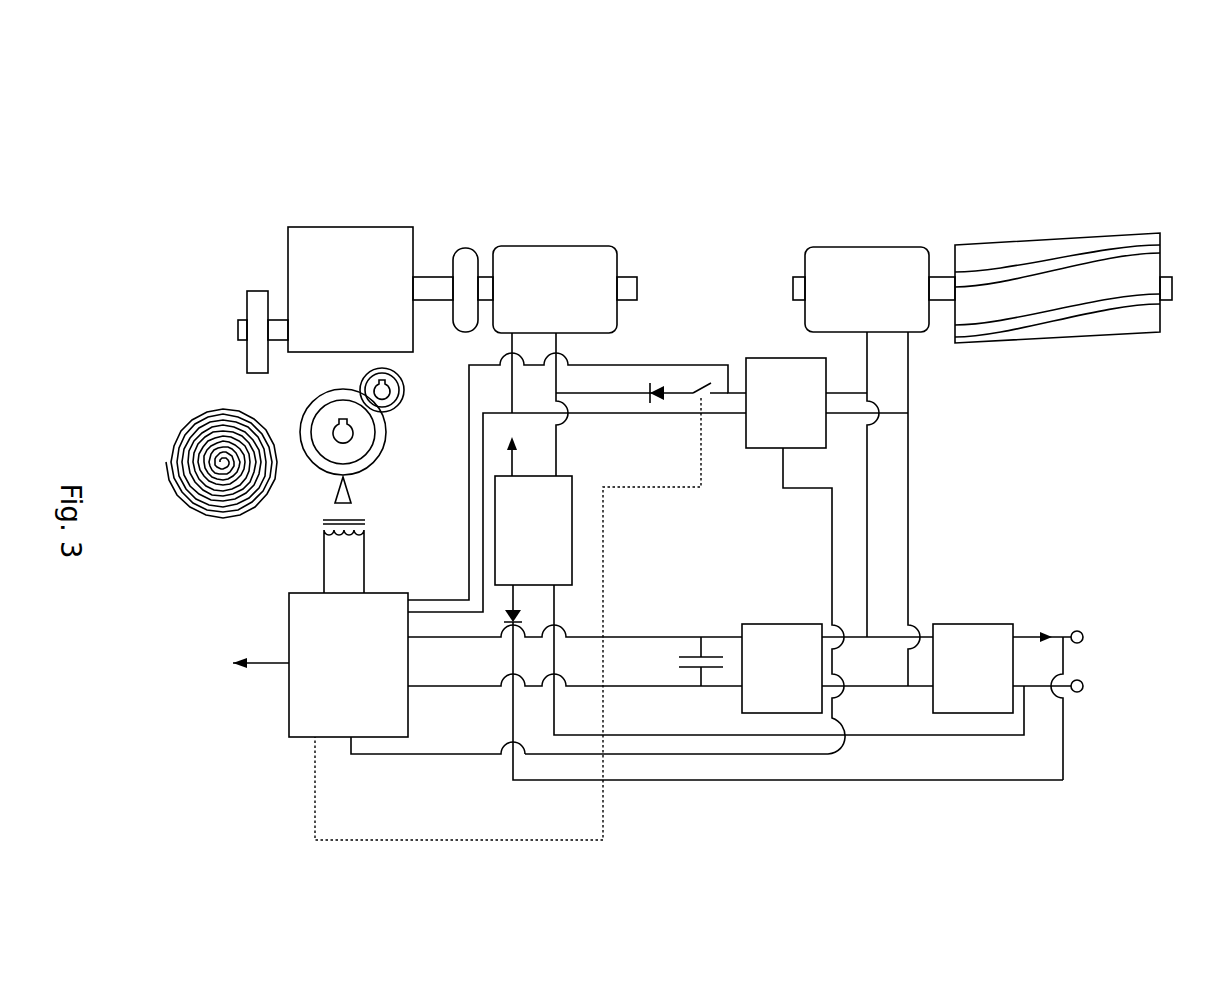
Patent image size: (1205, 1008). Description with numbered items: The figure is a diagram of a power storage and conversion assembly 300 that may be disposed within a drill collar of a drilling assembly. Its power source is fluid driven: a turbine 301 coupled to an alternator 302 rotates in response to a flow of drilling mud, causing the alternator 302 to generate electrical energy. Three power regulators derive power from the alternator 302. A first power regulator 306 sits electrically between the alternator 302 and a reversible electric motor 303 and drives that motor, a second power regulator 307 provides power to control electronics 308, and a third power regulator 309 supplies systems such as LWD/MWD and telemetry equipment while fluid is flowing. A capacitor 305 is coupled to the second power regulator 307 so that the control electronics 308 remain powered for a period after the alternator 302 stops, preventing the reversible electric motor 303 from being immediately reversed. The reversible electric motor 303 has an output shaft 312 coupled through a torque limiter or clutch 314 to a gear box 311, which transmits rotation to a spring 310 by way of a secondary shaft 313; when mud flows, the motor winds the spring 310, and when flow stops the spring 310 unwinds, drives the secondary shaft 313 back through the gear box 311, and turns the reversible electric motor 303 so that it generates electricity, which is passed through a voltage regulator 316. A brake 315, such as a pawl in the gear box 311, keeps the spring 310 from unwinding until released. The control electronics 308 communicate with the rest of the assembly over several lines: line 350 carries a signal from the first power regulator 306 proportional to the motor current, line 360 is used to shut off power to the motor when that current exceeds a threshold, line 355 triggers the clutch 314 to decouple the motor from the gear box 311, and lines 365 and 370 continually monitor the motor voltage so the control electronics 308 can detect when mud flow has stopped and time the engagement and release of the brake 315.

The power storage and conversion assembly 300 is at (397, 101).
The turbine 301 is at (1040, 245).
The alternator 302 is at (848, 246).
The reversible electric motor 303 is at (550, 245).
The capacitor 305 is at (700, 680).
The first power regulator 306 is at (787, 357).
The second power regulator 307 is at (768, 713).
The control electronics 308 is at (288, 724).
The third power regulator 309 is at (971, 623).
The spring 310 is at (252, 290).
The gear box 311 is at (306, 227).
The shaft 312 is at (486, 274).
The secondary shaft 313 is at (279, 318).
The torque limiter/clutch 314 is at (466, 247).
The brake 315 is at (338, 495).
The voltage regulator 316 is at (573, 510).
The line 350 is at (418, 753).
The line 355 is at (236, 660).
The line 360 is at (499, 838).
The line 365 is at (468, 528).
The line 370 is at (483, 578).